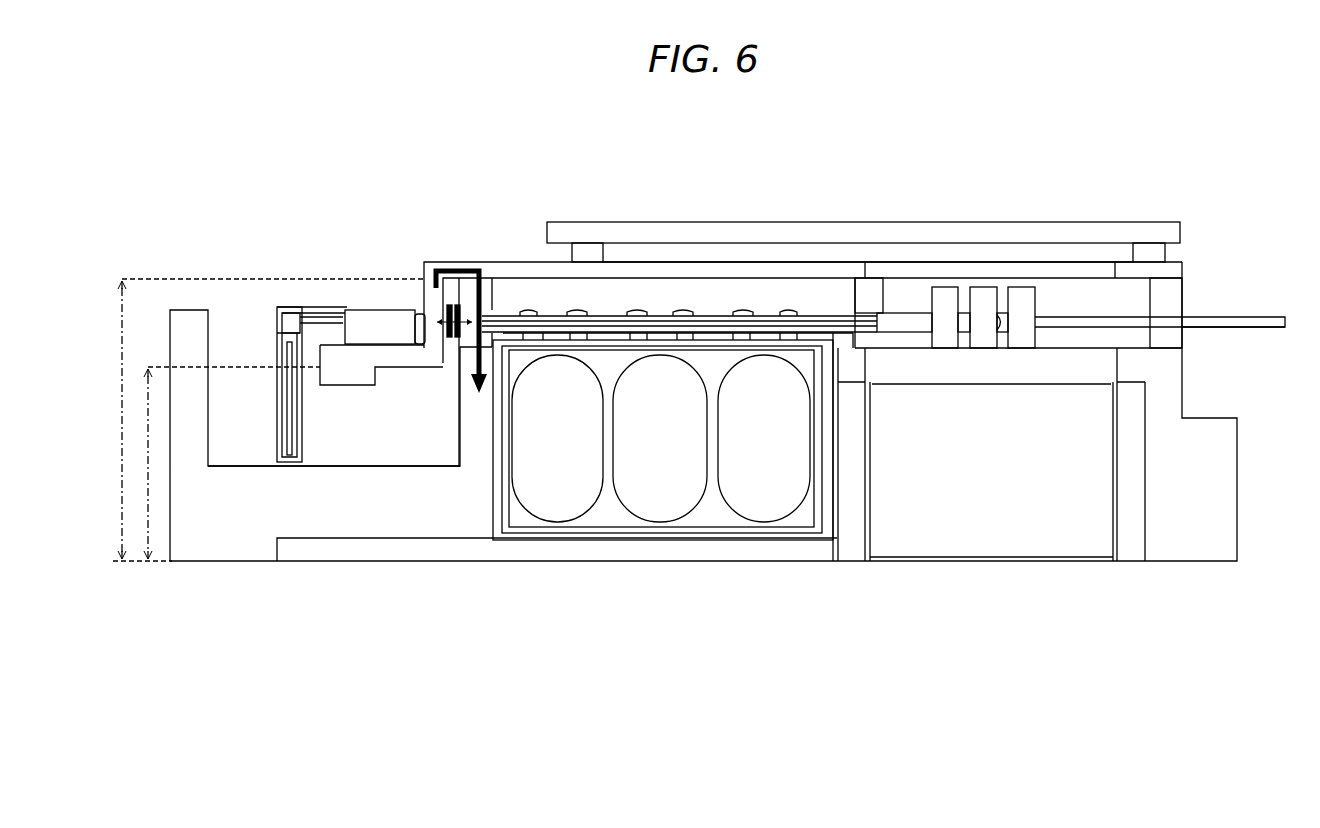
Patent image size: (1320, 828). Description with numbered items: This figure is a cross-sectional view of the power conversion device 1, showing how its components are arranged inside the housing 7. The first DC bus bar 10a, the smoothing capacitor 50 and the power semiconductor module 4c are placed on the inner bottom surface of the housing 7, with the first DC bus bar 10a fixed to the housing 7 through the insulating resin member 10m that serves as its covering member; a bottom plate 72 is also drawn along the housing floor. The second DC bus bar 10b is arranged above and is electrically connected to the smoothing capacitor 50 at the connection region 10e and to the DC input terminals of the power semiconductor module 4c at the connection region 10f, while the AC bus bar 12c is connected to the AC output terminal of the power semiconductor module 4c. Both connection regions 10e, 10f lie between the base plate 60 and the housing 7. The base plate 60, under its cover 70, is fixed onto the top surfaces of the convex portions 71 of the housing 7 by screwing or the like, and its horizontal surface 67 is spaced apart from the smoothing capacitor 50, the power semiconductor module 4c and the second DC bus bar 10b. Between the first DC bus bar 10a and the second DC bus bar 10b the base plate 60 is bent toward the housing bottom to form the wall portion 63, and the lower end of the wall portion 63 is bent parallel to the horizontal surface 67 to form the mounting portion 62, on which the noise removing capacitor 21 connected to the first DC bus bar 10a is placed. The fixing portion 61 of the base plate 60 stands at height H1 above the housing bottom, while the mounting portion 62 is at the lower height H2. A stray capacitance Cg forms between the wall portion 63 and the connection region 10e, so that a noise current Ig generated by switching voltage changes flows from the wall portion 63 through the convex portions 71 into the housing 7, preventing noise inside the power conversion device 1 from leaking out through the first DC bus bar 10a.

The power conversion device 1 is at (290, 157).
The housing 7 is at (242, 565).
The power semiconductor module 4c is at (965, 548).
The bottom plate 72 is at (392, 553).
The first DC bus bar 10a is at (274, 363).
The insulating resin member 10m is at (275, 447).
The noise removing capacitor 21 is at (357, 318).
The mounting portion 62 is at (396, 372).
The wall portion 63 is at (418, 287).
The second DC bus bar 10b is at (465, 292).
The stray capacitance Cg is at (453, 343).
The noise current Ig is at (475, 397).
The connection region 10e is at (545, 303).
The smoothing capacitor 50 is at (663, 492).
The connection region 10f is at (913, 305).
The fixing portion 61 is at (1182, 278).
The convex portion 71 is at (424, 258).
The AC bus bar 12c is at (1210, 328).
The cover plate 70 is at (927, 222).
The base plate 60 is at (993, 262).
The horizontal surface 67 is at (733, 262).
The height of fixing portion H1 is at (260, 420).
The height of mounting portion H2 is at (223, 463).